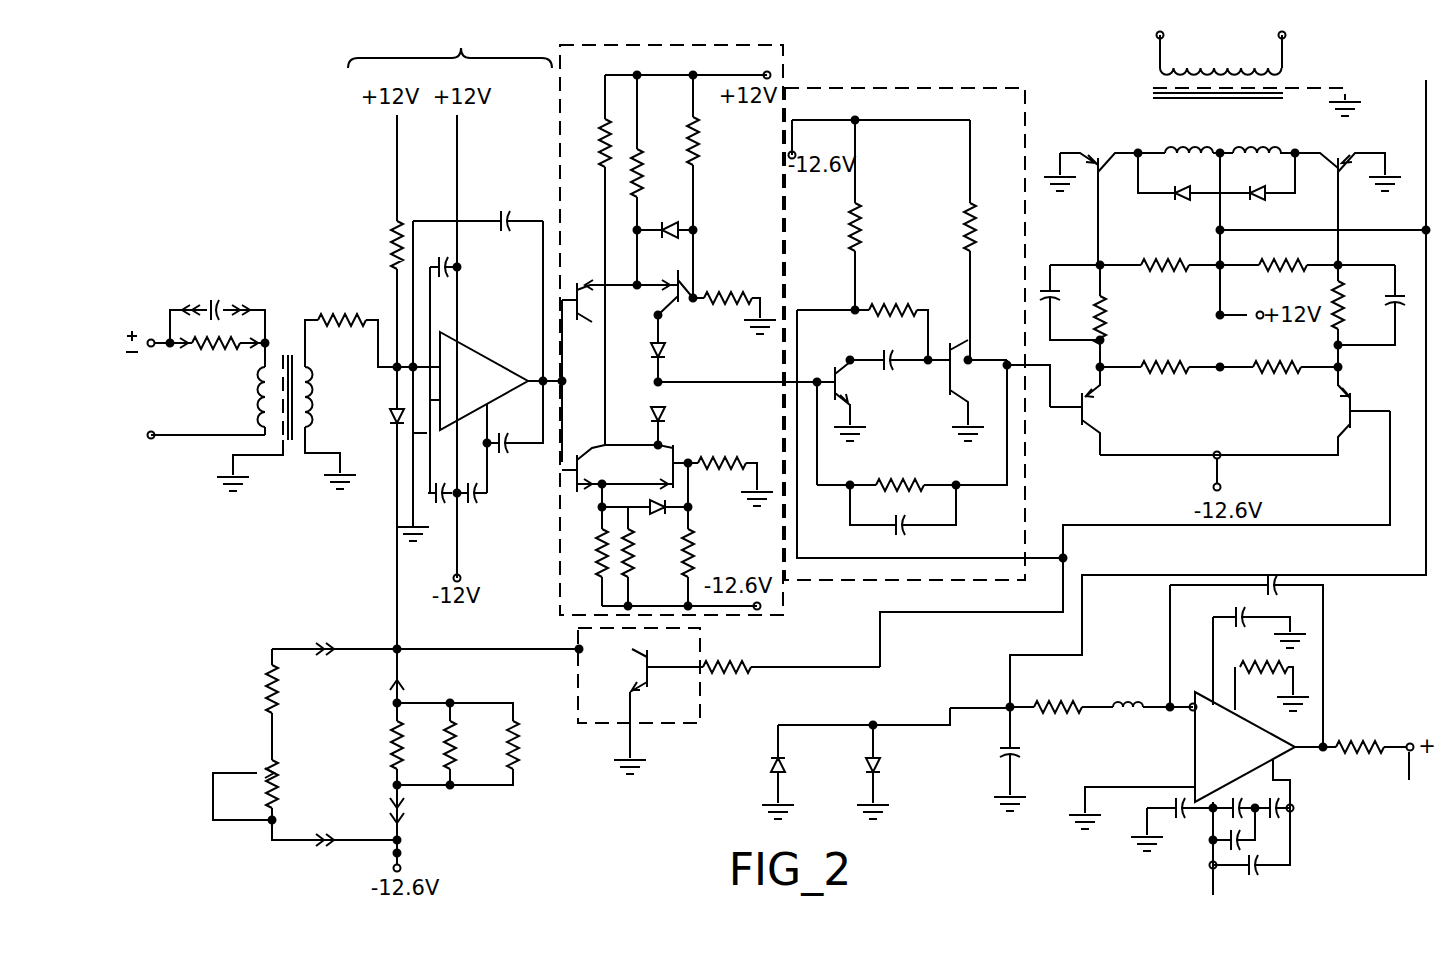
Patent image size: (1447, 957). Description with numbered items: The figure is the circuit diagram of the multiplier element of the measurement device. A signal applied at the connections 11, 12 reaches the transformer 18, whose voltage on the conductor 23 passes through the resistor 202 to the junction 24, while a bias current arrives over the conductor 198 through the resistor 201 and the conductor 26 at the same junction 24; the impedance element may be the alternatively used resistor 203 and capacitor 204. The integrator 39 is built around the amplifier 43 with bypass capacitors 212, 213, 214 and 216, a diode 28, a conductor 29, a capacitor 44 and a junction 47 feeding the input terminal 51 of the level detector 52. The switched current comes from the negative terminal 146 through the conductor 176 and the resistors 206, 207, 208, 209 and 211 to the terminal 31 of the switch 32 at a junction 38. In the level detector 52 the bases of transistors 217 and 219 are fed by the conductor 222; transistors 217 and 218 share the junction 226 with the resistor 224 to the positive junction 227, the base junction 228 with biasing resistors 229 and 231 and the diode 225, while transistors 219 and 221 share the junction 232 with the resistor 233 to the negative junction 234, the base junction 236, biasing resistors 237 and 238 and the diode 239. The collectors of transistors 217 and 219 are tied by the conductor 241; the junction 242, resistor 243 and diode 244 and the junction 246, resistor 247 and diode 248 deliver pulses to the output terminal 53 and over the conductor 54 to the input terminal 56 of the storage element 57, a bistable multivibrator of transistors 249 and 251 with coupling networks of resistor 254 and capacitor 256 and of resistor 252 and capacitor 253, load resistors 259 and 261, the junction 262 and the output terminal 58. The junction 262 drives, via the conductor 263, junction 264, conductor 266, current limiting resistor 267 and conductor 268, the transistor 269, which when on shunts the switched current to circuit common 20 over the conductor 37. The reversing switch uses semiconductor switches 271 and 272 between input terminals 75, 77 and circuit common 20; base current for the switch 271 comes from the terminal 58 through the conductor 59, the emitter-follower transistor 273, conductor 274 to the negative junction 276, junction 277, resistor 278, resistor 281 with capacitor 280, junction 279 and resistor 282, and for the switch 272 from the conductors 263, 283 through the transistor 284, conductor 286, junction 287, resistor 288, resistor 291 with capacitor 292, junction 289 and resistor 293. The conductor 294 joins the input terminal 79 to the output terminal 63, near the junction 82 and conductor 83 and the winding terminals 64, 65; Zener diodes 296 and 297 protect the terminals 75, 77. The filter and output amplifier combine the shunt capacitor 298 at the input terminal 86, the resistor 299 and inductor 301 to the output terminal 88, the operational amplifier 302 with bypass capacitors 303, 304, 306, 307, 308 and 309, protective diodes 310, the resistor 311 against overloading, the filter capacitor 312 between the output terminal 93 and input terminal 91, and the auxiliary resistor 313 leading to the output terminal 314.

The input terminal 11 is at (150, 348).
The input terminal 12 is at (149, 440).
The transformer 18 is at (300, 400).
The ground 20 is at (1078, 210).
The lead 23 is at (318, 342).
The junction 24 is at (395, 370).
The lead 26 is at (397, 293).
The diode 28 is at (390, 420).
The lead 29 is at (396, 580).
The lead 31 is at (400, 647).
The transistor stage 32 is at (700, 710).
The lead 37 is at (632, 748).
The junction 38 is at (392, 652).
The amplifier stage 39 is at (450, 44).
The amplifier 43 is at (480, 355).
The capacitor 44 is at (500, 210).
The output junction 47 is at (542, 386).
The junction 51 is at (563, 386).
The switching circuit 52 is at (783, 50).
The junction 53 is at (668, 386).
The lead 54 is at (733, 384).
The junction 56 is at (818, 378).
The oscillator circuit 57 is at (972, 88).
The junction 58 is at (1007, 355).
The lead 59 is at (1060, 418).
The junction 63 is at (1220, 265).
The output terminal 64 is at (1156, 36).
The output terminal 65 is at (1286, 36).
The junction 75 is at (1138, 150).
The junction 77 is at (1296, 150).
The inductor winding 79 is at (1225, 148).
The junction 82 is at (1422, 234).
The lead 83 is at (1424, 122).
The junction 86 is at (1006, 705).
The junction 88 is at (1170, 712).
The amplifier input 91 is at (1194, 700).
The output junction 93 is at (1326, 744).
The terminal 146 is at (393, 873).
The junction 176 is at (400, 853).
The lead 198 is at (396, 152).
The resistor 201 is at (390, 238).
The resistor 202 is at (352, 320).
The variable resistor 203 is at (218, 352).
The variable capacitor 204 is at (215, 295).
The resistor 206 is at (265, 688).
The potentiometer 207 is at (280, 782).
The resistor 208 is at (388, 740).
The resistor 209 is at (425, 744).
The resistor 211 is at (518, 748).
The capacitor 212 is at (452, 260).
The capacitor 213 is at (440, 510).
The capacitor 214 is at (472, 508).
The lead 216 is at (500, 458).
The transistor 217 is at (580, 290).
The transistor 218 is at (686, 280).
The transistor 219 is at (594, 490).
The transistor 221 is at (632, 467).
The capacitor 222 is at (522, 448).
The resistor 224 is at (640, 180).
The diode 225 is at (672, 222).
The junction 226 is at (637, 318).
The supply lead 227 is at (640, 80).
The junction 228 is at (696, 302).
The resistor 229 is at (728, 292).
The resistor 231 is at (700, 140).
The junction 232 is at (582, 509).
The resistor 233 is at (595, 548).
The supply lead 234 is at (630, 608).
The resistor 236 is at (695, 468).
The lead 237 is at (735, 462).
The resistor 238 is at (694, 566).
The diode 239 is at (660, 516).
The lead 241 is at (566, 342).
The diode 242 is at (666, 348).
The resistor 243 is at (651, 558).
The lead 244 is at (668, 360).
The junction 246 is at (665, 440).
The resistor 247 is at (600, 140).
The diode 248 is at (668, 414).
The transistor 249 is at (862, 400).
The transistor 251 is at (955, 335).
The resistor 252 is at (890, 306).
The capacitor 253 is at (893, 372).
The resistor 254 is at (900, 478).
The capacitor 256 is at (895, 535).
The resistor 259 is at (968, 212).
The resistor 261 is at (860, 228).
The junction 262 is at (850, 306).
The lead 263 is at (950, 560).
The junction 264 is at (1063, 552).
The lead 266 is at (858, 672).
The resistor 267 is at (745, 670).
The transistor 268 is at (675, 665).
The emitter lead 269 is at (659, 722).
The transistor 271 is at (1112, 180).
The transistor 272 is at (1322, 188).
The transistor 273 is at (1095, 412).
The lead 274 is at (1170, 455).
The supply terminal 276 is at (1222, 453).
The junction 277 is at (1104, 372).
The resistor 278 is at (1158, 362).
The junction 279 is at (1103, 262).
The capacitor 280 is at (1070, 302).
The resistor 281 is at (1108, 305).
The resistor 282 is at (1146, 277).
The lead 283 is at (1300, 528).
The transistor 284 is at (1358, 418).
The lead 286 is at (1305, 457).
The junction 287 is at (1352, 367).
The resistor 288 is at (1260, 374).
The junction 289 is at (1340, 262).
The resistor 291 is at (1330, 296).
The capacitor 292 is at (1390, 308).
The resistor 293 is at (1275, 260).
The junction 294 is at (1218, 212).
The diode 296 is at (1179, 176).
The diode 297 is at (1257, 176).
The capacitor 298 is at (996, 750).
The resistor 299 is at (1054, 700).
The inductor 301 is at (1128, 700).
The amplifier 302 is at (1193, 755).
The capacitor 303 is at (1180, 830).
The capacitor 304 is at (1238, 804).
The capacitor 306 is at (1292, 814).
The capacitor 307 is at (1250, 845).
The capacitor 308 is at (1262, 872).
The capacitor 309 is at (1240, 628).
The diodes 310 is at (868, 768).
The resistor 311 is at (1260, 674).
The capacitor 312 is at (1285, 586).
The resistor 313 is at (1372, 742).
The output terminal 314 is at (1405, 781).